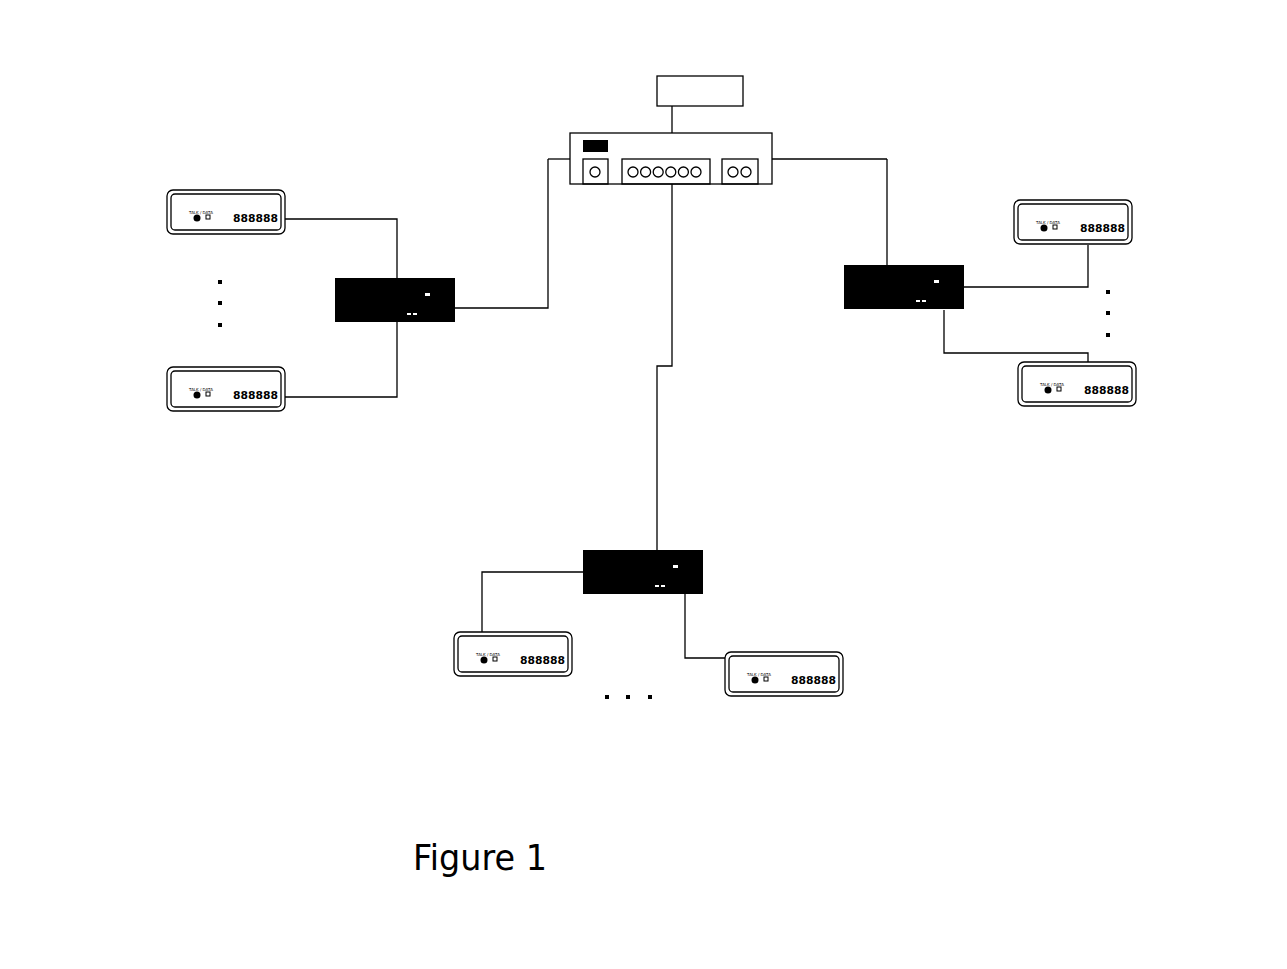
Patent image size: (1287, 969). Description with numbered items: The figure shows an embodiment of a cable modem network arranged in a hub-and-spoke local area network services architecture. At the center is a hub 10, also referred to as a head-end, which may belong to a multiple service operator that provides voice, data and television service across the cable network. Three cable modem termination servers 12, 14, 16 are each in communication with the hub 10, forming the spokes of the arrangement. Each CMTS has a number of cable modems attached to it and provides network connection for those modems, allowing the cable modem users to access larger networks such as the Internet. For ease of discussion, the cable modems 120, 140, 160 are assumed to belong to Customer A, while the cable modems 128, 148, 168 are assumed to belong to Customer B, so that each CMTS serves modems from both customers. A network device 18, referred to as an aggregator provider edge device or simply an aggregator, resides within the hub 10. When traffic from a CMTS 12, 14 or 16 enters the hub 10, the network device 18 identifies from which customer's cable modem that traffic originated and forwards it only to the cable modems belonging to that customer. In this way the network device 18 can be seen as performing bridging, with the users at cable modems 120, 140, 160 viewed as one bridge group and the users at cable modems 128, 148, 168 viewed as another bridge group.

The hub 10 is at (772, 133).
The cable modem termination server 12 is at (844, 280).
The cable modem termination server 14 is at (700, 553).
The cable modem termination server 16 is at (428, 322).
The network device 18 is at (720, 76).
The cable modem 120 is at (1136, 375).
The cable modem 128 is at (1052, 208).
The cable modem 140 is at (843, 675).
The cable modem 148 is at (454, 647).
The cable modem 160 is at (237, 403).
The cable modem 168 is at (213, 190).